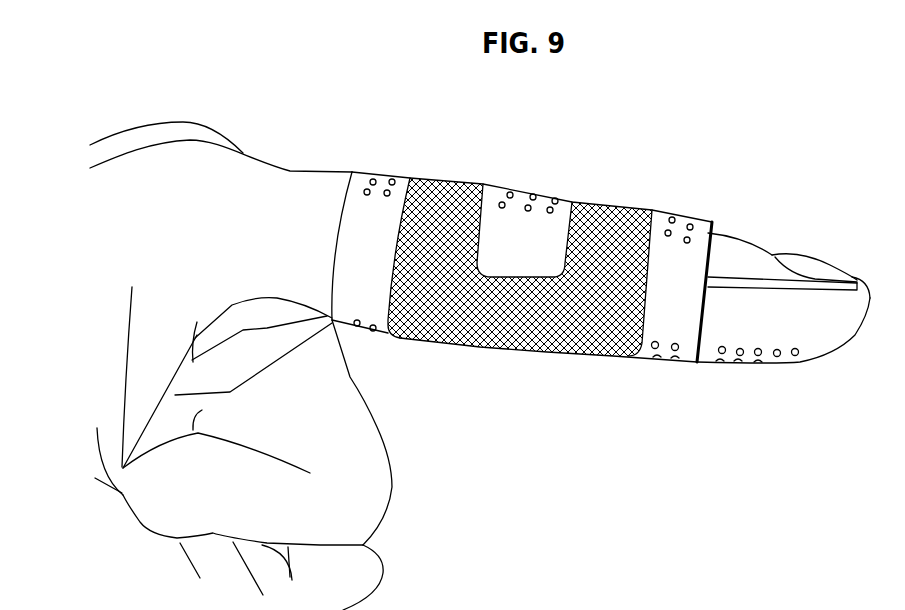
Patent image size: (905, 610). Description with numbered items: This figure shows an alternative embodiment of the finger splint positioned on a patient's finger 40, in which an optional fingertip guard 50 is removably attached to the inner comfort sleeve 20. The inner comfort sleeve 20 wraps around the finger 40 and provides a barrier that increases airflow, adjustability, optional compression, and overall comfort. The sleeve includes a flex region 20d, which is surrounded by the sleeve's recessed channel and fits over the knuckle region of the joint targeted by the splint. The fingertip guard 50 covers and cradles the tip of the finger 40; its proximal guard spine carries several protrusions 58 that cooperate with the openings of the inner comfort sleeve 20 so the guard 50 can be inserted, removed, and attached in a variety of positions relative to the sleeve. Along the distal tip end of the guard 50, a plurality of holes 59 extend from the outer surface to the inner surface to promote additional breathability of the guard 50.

The inner comfort sleeve 20 is at (522, 265).
The flex region 20d is at (530, 244).
The finger 40 is at (752, 268).
The fingertip guard 50 is at (771, 326).
The protrusions 58 is at (657, 358).
The holes 59 is at (795, 356).